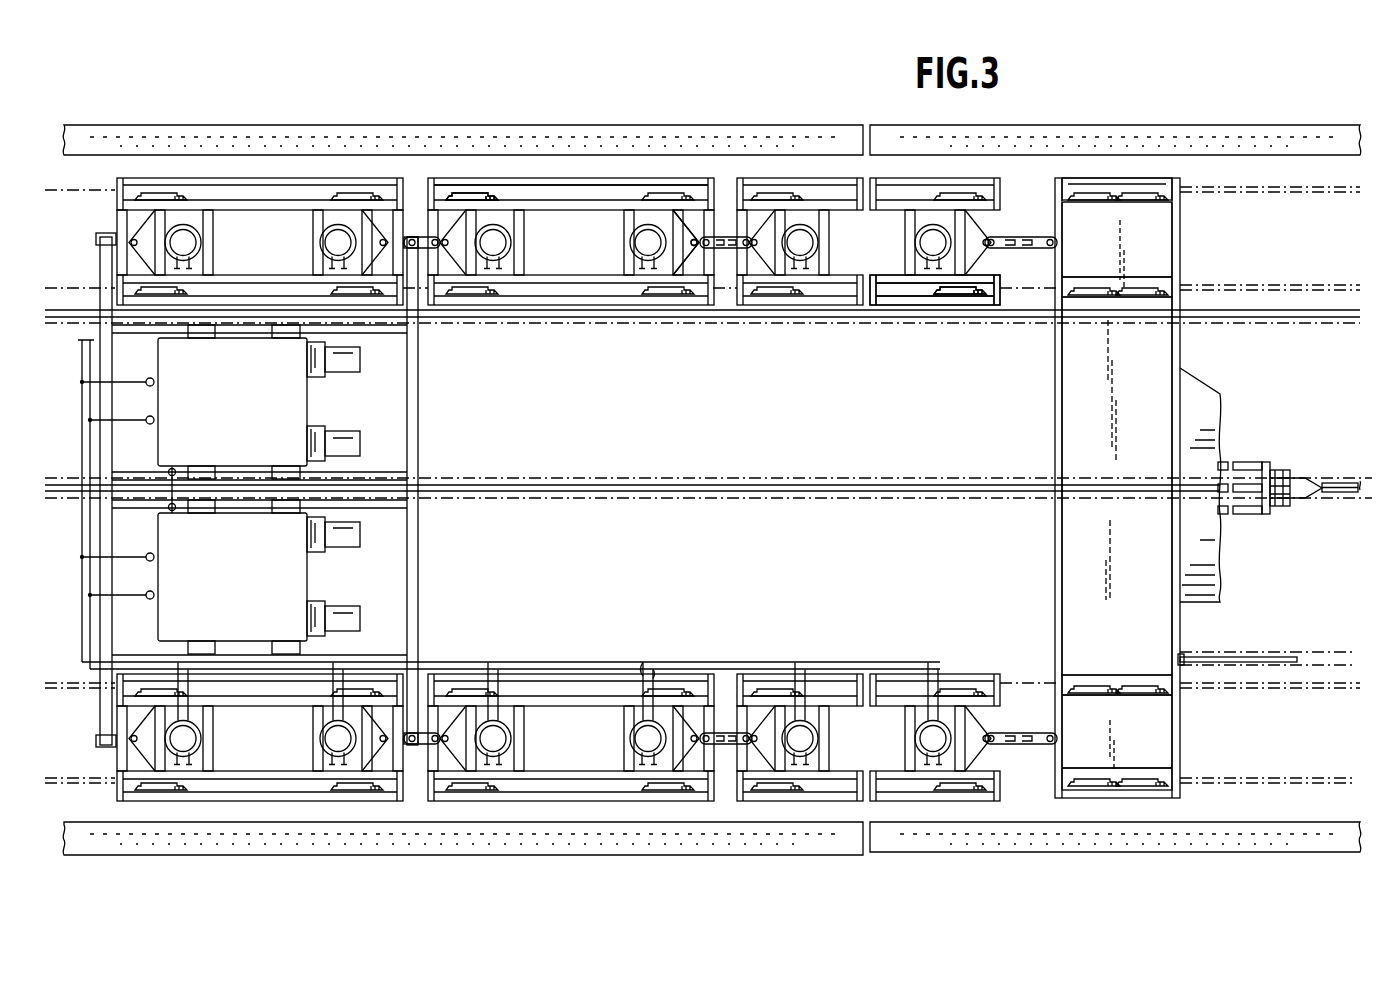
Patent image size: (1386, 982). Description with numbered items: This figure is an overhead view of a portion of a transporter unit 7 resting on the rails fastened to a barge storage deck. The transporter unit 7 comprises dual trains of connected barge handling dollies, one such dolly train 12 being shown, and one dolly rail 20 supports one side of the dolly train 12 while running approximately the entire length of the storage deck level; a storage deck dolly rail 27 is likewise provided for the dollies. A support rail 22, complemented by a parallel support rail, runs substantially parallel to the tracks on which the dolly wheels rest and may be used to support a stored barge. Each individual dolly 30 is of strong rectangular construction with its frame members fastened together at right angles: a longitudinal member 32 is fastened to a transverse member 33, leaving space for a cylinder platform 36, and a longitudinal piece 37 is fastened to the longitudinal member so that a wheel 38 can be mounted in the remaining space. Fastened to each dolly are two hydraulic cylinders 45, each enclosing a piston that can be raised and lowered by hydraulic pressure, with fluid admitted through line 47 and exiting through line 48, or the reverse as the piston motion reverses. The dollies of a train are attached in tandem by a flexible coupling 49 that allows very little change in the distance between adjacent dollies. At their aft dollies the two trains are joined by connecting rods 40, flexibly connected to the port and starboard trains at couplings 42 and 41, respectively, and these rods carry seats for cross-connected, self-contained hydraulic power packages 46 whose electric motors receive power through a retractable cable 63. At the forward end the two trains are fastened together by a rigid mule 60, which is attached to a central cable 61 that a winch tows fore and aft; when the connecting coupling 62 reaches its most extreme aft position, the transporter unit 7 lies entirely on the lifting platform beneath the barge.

The transporter unit 7 is at (1055, 340).
The dolly train 12 is at (958, 675).
The dolly rail 20 is at (1228, 782).
The support rail 22 is at (1067, 843).
The storage deck dolly rail 27 is at (1270, 188).
The dolly 30 is at (595, 680).
The longitudinal member 32 is at (578, 202).
The transverse member 33 is at (674, 220).
The cylinder platform 36 is at (508, 217).
The longitudinal piece 37 is at (636, 184).
The wheel 38 is at (462, 196).
The connecting rod 40 is at (103, 478).
The coupling 41 is at (422, 736).
The coupling 42 is at (411, 236).
The hydraulic cylinder 45 is at (500, 722).
The hydraulic power package 46 is at (292, 422).
The hydraulic line 47 is at (653, 676).
The hydraulic line 48 is at (640, 670).
The flexible coupling 49 is at (722, 733).
The rigid mule 60 is at (1148, 525).
The cable 61 is at (1333, 493).
The connecting coupling 62 is at (1293, 500).
The retractable cable 63 is at (1246, 658).